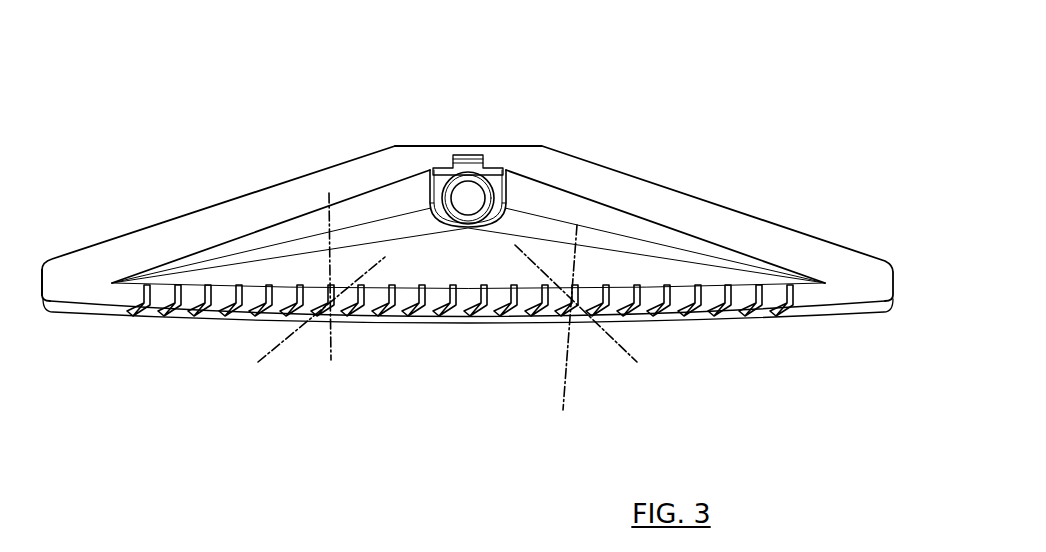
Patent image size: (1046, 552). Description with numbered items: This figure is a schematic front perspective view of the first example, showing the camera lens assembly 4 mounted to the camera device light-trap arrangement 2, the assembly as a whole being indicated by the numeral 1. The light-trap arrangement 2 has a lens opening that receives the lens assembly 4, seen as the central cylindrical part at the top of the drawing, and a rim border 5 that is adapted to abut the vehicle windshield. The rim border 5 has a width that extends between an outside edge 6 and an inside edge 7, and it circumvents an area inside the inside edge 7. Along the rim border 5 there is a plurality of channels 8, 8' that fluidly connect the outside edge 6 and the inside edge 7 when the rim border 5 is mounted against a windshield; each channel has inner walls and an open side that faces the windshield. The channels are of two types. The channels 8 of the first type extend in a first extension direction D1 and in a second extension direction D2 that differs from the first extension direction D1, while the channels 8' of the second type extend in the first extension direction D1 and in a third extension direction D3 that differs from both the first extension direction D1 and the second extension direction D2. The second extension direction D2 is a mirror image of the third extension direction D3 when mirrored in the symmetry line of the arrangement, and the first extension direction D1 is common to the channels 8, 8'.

The device 1 is at (510, 83).
The light trap arrangement 2 is at (260, 158).
The lens assembly 4 is at (470, 195).
The rim border 5 is at (100, 263).
The outside edge 6 is at (112, 312).
The inside edge 7 is at (195, 287).
The channels 8 is at (291, 362).
The channels 8' is at (644, 357).
The first extension direction D1 is at (331, 360).
The second extension direction D2 is at (368, 290).
The third extension direction D3 is at (595, 323).